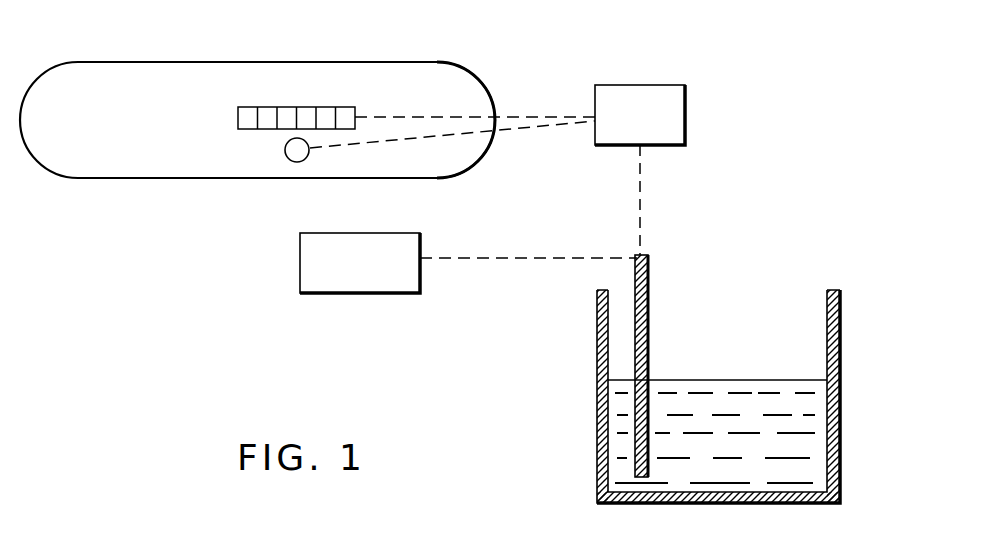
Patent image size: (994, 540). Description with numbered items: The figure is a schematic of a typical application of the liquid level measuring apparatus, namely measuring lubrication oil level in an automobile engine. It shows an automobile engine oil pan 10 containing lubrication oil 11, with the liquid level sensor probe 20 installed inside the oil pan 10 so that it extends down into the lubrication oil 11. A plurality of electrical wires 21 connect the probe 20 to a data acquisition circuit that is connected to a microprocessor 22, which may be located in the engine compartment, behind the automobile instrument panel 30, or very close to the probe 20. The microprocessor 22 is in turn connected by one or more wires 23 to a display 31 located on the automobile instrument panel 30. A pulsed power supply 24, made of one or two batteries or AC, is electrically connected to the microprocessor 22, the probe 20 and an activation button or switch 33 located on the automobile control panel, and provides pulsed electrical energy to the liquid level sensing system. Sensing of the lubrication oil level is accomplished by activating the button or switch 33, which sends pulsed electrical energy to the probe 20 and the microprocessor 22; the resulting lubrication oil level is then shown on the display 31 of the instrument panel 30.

The engine oil pan 10 is at (840, 325).
The lubrication oil 11 is at (707, 380).
The liquid level sensor probe 20 is at (649, 302).
The electrical wires 21 is at (642, 197).
The microprocessor 22 is at (685, 110).
The wires 23 is at (525, 113).
The pulsed power supply 24 is at (300, 258).
The automobile instrument panel 30 is at (218, 62).
The display 31 is at (305, 107).
The activation button or switch 33 is at (297, 162).